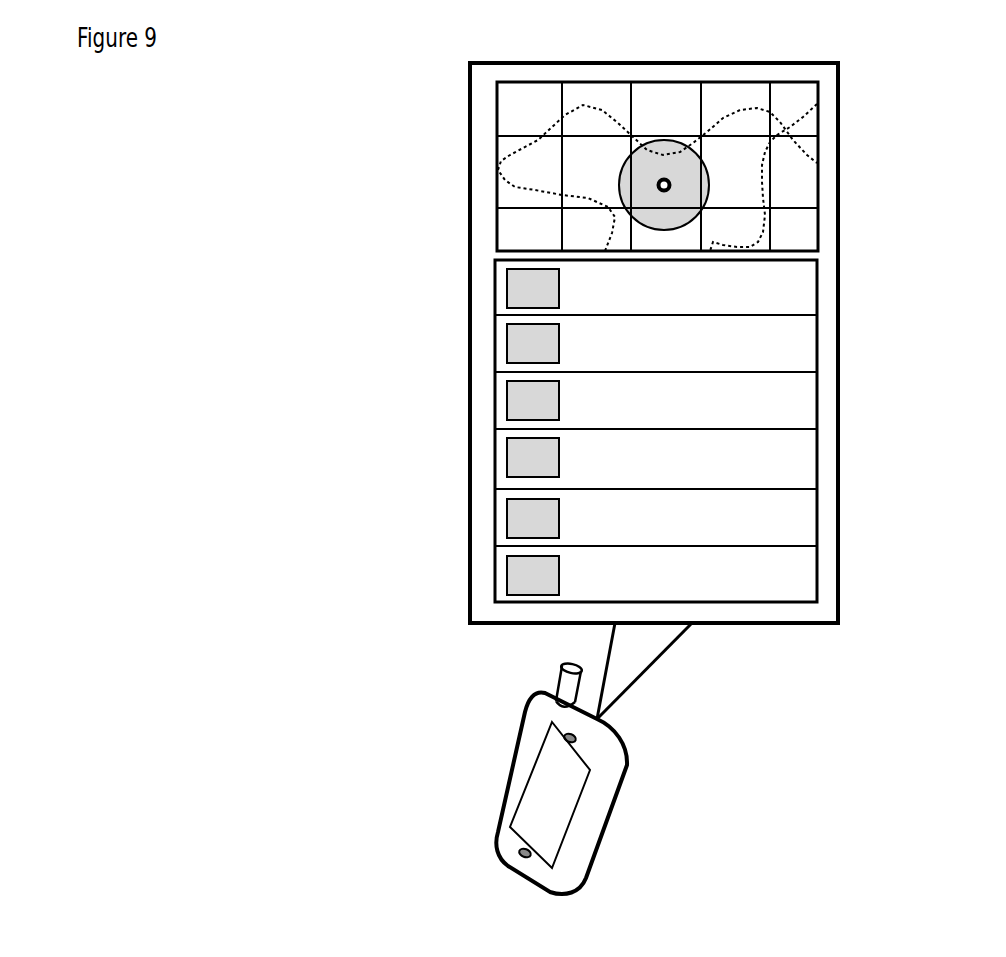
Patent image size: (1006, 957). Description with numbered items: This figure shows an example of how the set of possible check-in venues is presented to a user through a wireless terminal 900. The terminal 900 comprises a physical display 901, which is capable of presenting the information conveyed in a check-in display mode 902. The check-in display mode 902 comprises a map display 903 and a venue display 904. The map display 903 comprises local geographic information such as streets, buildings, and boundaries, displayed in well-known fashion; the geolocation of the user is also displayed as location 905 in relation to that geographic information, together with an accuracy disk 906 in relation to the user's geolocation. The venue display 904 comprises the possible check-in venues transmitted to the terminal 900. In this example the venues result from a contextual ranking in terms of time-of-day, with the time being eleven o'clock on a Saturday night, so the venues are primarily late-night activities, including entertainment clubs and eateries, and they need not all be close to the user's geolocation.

The wireless terminal 900 is at (620, 748).
The physical display 901 is at (545, 780).
The check-in display mode 902 is at (838, 115).
The map display 903 is at (818, 190).
The venue display 904 is at (817, 345).
The location 905 is at (658, 182).
The accuracy disk 906 is at (618, 190).